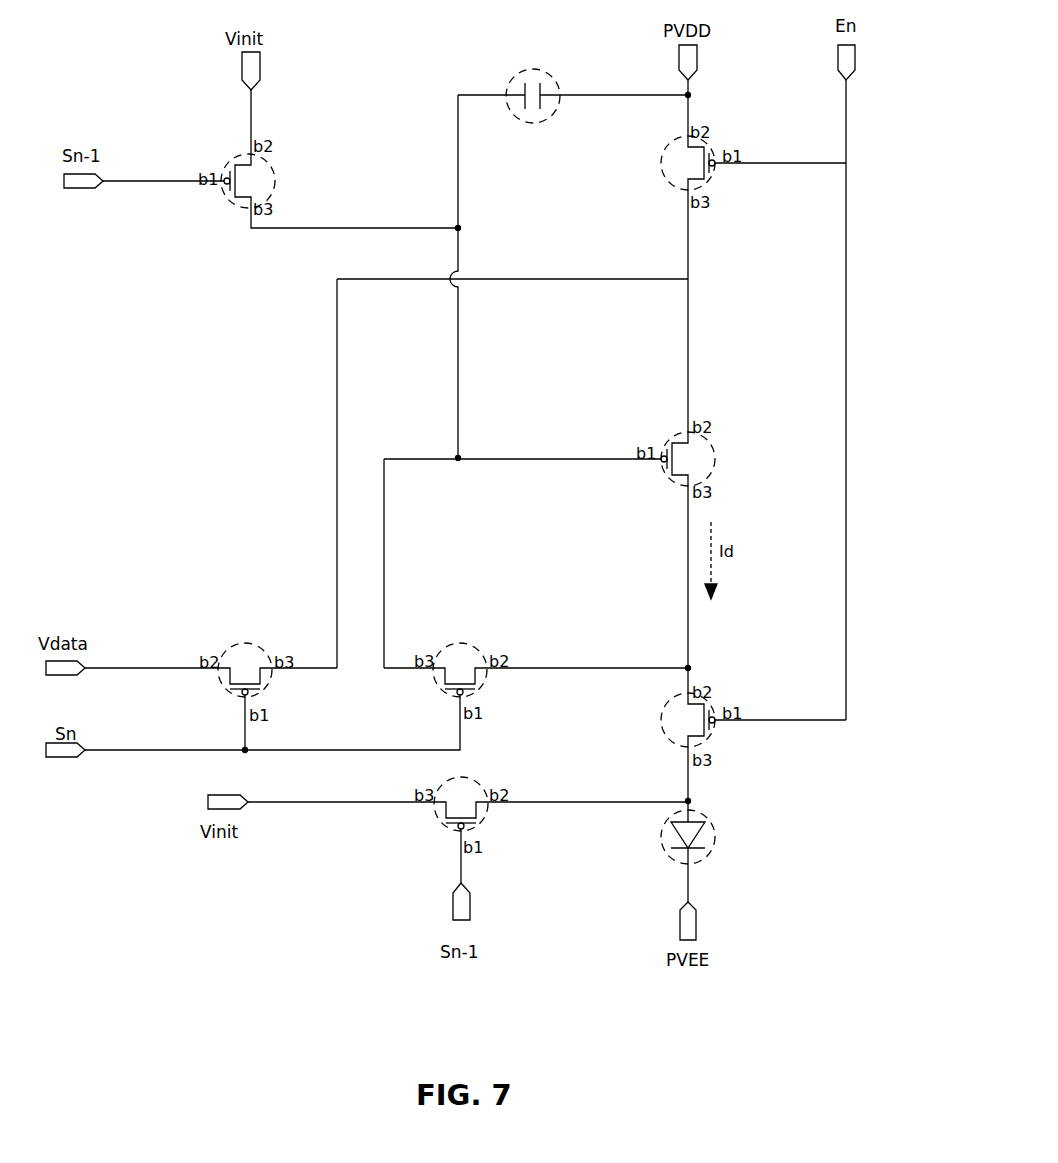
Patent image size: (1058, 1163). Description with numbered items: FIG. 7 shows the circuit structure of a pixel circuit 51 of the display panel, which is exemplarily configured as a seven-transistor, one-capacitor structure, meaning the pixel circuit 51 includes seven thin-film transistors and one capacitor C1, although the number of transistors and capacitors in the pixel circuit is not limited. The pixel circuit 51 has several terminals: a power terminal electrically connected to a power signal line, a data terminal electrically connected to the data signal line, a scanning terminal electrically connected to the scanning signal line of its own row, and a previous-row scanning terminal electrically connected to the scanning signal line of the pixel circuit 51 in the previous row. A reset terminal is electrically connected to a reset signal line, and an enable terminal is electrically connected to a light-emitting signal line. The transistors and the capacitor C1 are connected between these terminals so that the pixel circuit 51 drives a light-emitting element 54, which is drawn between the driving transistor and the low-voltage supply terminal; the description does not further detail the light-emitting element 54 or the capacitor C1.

The pixel circuit 51 is at (158, 110).
The light emitting device 54 is at (712, 853).
The storage capacitor C1 is at (552, 78).